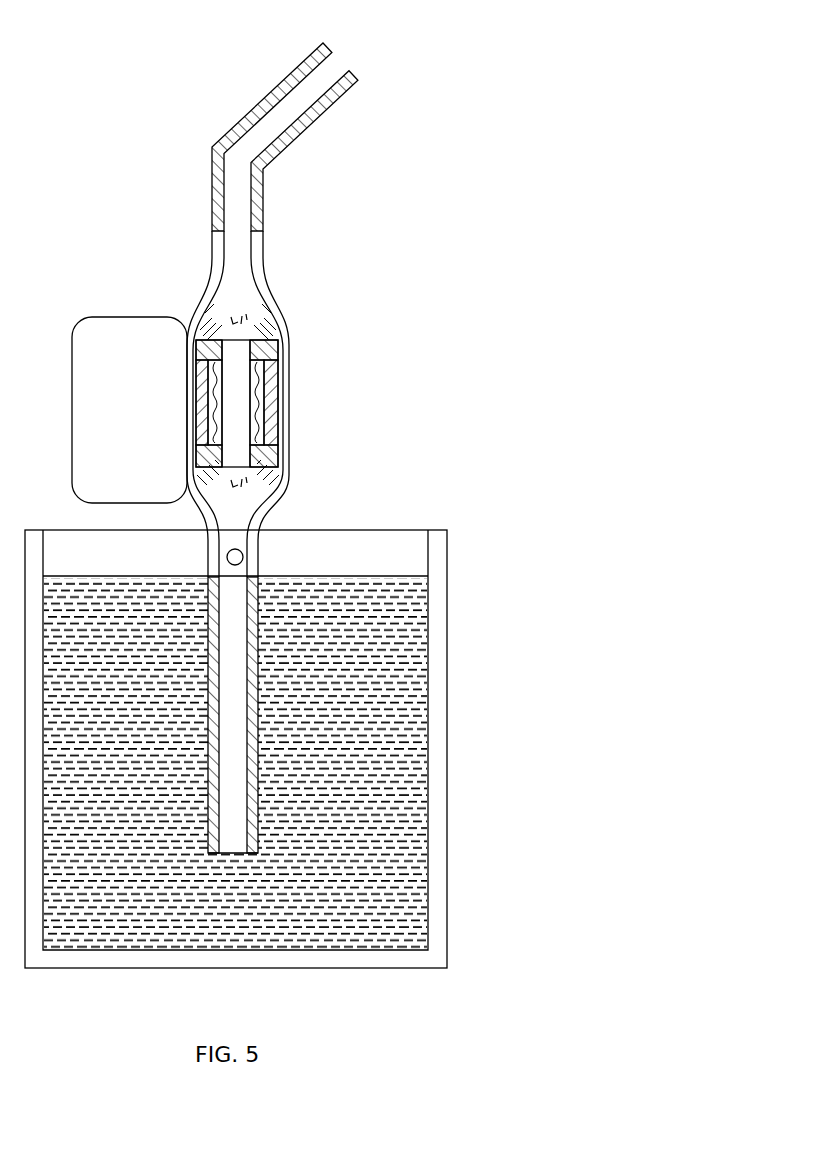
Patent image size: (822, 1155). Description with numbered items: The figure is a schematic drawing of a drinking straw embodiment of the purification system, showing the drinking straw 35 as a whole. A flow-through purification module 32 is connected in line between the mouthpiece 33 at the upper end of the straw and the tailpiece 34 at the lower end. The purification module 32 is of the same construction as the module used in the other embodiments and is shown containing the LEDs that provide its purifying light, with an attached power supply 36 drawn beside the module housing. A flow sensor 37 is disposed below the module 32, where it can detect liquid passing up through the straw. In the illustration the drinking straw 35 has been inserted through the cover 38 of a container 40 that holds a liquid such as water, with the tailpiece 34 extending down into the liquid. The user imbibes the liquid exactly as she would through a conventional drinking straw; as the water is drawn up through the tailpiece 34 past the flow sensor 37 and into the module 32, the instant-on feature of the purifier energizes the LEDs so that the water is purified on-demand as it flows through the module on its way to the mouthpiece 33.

The flow-through purification module 32 is at (252, 318).
The mouthpiece 33 is at (308, 135).
The tailpiece 34 is at (272, 690).
The drinking straw 35 is at (297, 440).
The power supply 36 is at (141, 409).
The flow sensor 37 is at (243, 553).
The cover 38 is at (380, 542).
The container 40 is at (428, 683).
The element LEDs is at (233, 371).